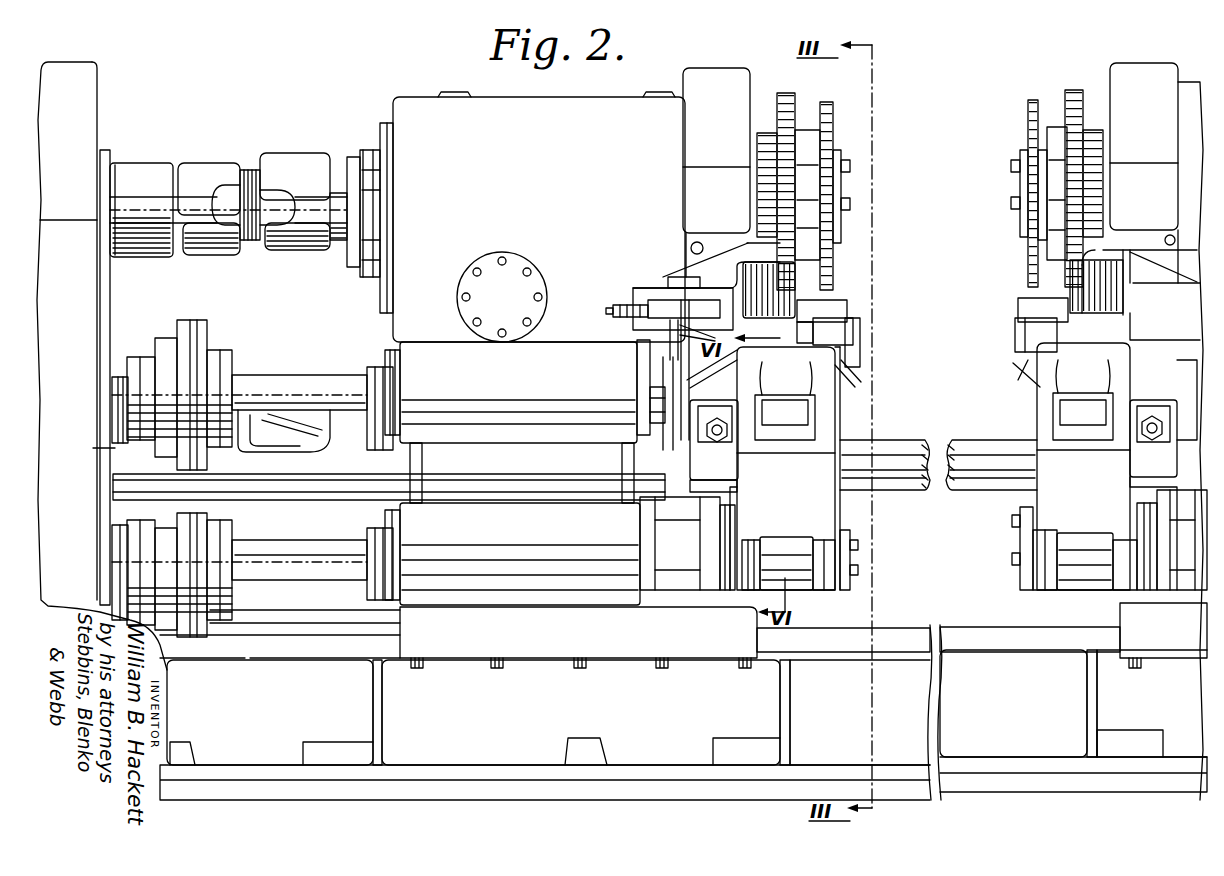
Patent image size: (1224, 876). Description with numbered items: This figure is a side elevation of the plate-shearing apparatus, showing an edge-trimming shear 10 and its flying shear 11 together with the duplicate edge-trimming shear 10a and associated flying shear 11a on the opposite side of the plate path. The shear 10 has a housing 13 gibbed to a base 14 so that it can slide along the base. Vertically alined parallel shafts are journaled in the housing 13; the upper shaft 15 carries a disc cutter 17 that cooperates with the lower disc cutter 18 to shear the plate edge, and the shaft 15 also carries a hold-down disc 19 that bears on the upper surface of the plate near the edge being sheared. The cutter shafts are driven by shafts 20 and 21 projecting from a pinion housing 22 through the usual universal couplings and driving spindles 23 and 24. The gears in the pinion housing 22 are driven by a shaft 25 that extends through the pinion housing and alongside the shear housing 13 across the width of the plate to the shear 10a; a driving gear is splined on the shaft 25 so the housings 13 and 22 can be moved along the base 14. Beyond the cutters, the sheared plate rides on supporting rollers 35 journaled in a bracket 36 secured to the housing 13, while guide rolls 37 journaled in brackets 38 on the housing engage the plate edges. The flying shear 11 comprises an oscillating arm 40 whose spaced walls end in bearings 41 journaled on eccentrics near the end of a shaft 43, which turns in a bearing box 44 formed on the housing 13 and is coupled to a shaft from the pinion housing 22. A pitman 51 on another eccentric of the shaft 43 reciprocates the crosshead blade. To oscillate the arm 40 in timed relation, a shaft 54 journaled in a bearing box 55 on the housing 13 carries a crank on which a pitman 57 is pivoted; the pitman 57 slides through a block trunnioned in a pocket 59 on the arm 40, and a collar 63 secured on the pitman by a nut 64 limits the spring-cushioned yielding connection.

The edge-trimming shear 10 is at (600, 102).
The second edge-trimming shear 10a is at (1190, 95).
The flying shear 11 is at (818, 425).
The associated flying shear 11a is at (1038, 425).
The housing 13 is at (483, 112).
The base 14 is at (980, 625).
The shaft 15 is at (775, 133).
The disc cutter 17 is at (786, 107).
The disc cutter 18 is at (812, 296).
The hold-down disc 19 is at (846, 118).
The shaft 20 is at (118, 185).
The shaft 21 is at (117, 375).
The pinion housing 22 is at (68, 115).
The universal coupling and driving spindle 23 is at (245, 175).
The universal coupling and driving spindle 24 is at (260, 375).
The shaft 25 is at (305, 480).
The supporting rollers 35 is at (837, 318).
The bracket 36 is at (845, 378).
The guide rolls 37 is at (780, 283).
The brackets 38 is at (700, 283).
The oscillating arm 40 is at (850, 490).
The bearings 41 is at (750, 608).
The shaft 43 is at (295, 565).
The bearing box 44 is at (545, 590).
The pitman 51 is at (790, 545).
The shaft 54 is at (298, 385).
The bearing box 55 is at (550, 342).
The pitman 57 is at (725, 433).
The pocket 59 is at (700, 478).
The collar 63 is at (730, 410).
The nut 64 is at (933, 440).